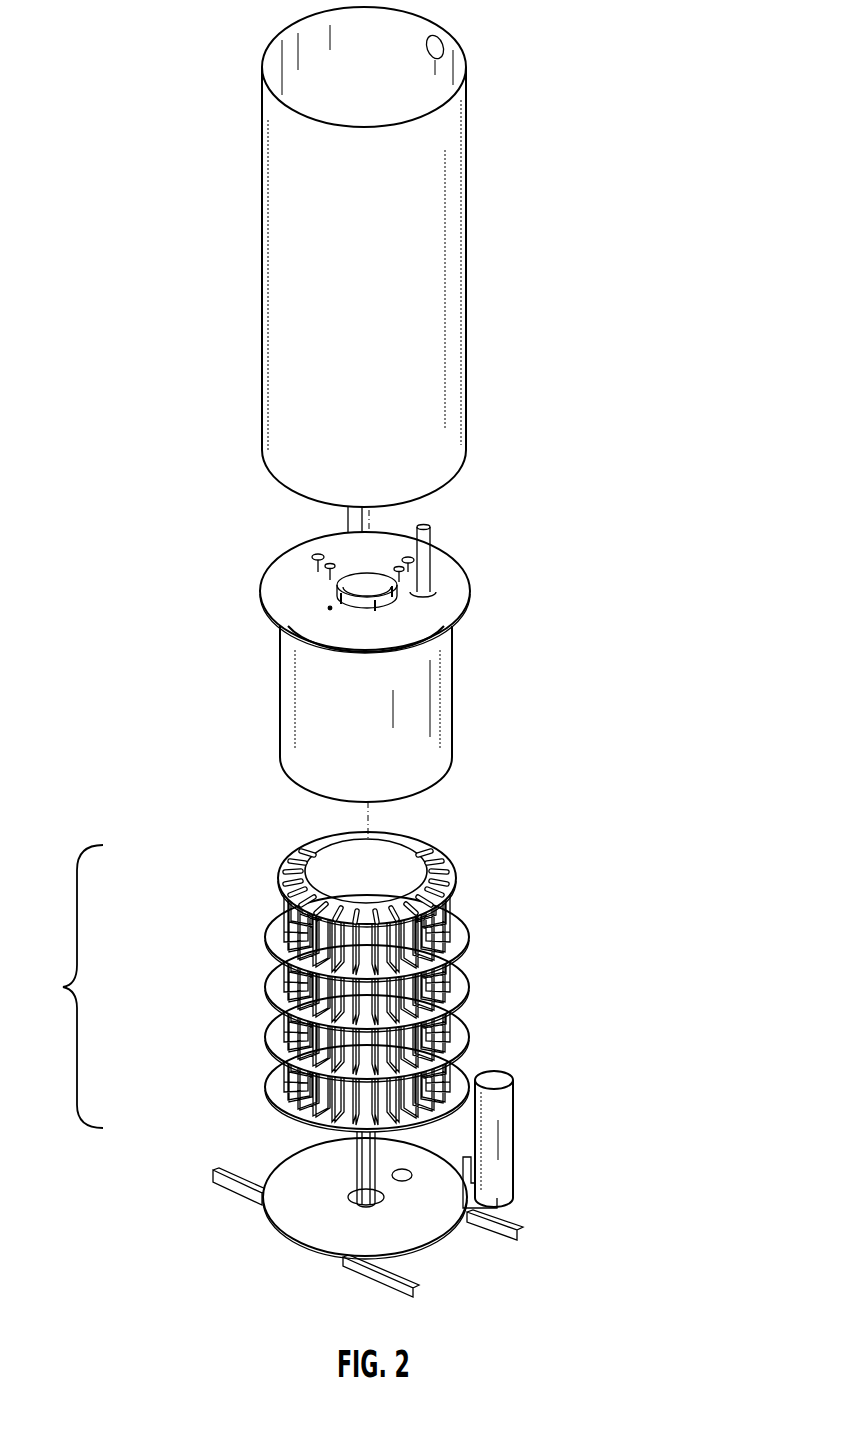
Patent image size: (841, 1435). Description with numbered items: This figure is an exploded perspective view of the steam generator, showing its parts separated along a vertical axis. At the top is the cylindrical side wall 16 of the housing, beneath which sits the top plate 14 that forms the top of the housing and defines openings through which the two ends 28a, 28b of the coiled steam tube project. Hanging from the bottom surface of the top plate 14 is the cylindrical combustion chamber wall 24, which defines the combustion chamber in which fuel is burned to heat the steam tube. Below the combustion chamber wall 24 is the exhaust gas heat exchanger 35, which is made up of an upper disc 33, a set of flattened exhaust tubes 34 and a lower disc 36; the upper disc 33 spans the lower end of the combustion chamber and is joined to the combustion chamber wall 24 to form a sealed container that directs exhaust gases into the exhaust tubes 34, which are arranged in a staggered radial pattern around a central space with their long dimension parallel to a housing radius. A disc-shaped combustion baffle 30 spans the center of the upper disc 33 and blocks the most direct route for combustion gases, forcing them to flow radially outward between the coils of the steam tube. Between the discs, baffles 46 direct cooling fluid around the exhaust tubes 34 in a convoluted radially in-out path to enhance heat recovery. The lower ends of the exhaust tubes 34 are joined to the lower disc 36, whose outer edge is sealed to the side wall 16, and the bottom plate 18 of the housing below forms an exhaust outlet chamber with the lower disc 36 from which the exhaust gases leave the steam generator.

The side wall 16 is at (467, 332).
The end of steam tube 28b is at (347, 527).
The end of steam tube 28a is at (421, 550).
The top plate 14 is at (455, 598).
The combustion chamber wall 24 is at (452, 698).
The exhaust gas heat exchanger 35 is at (68, 986).
The upper disc 33 is at (287, 887).
The combustion baffle 30 is at (379, 877).
The baffles 46 is at (275, 935).
The exhaust tubes 34 is at (500, 936).
The lower disc 36 is at (277, 1085).
The bottom plate 18 is at (418, 1230).